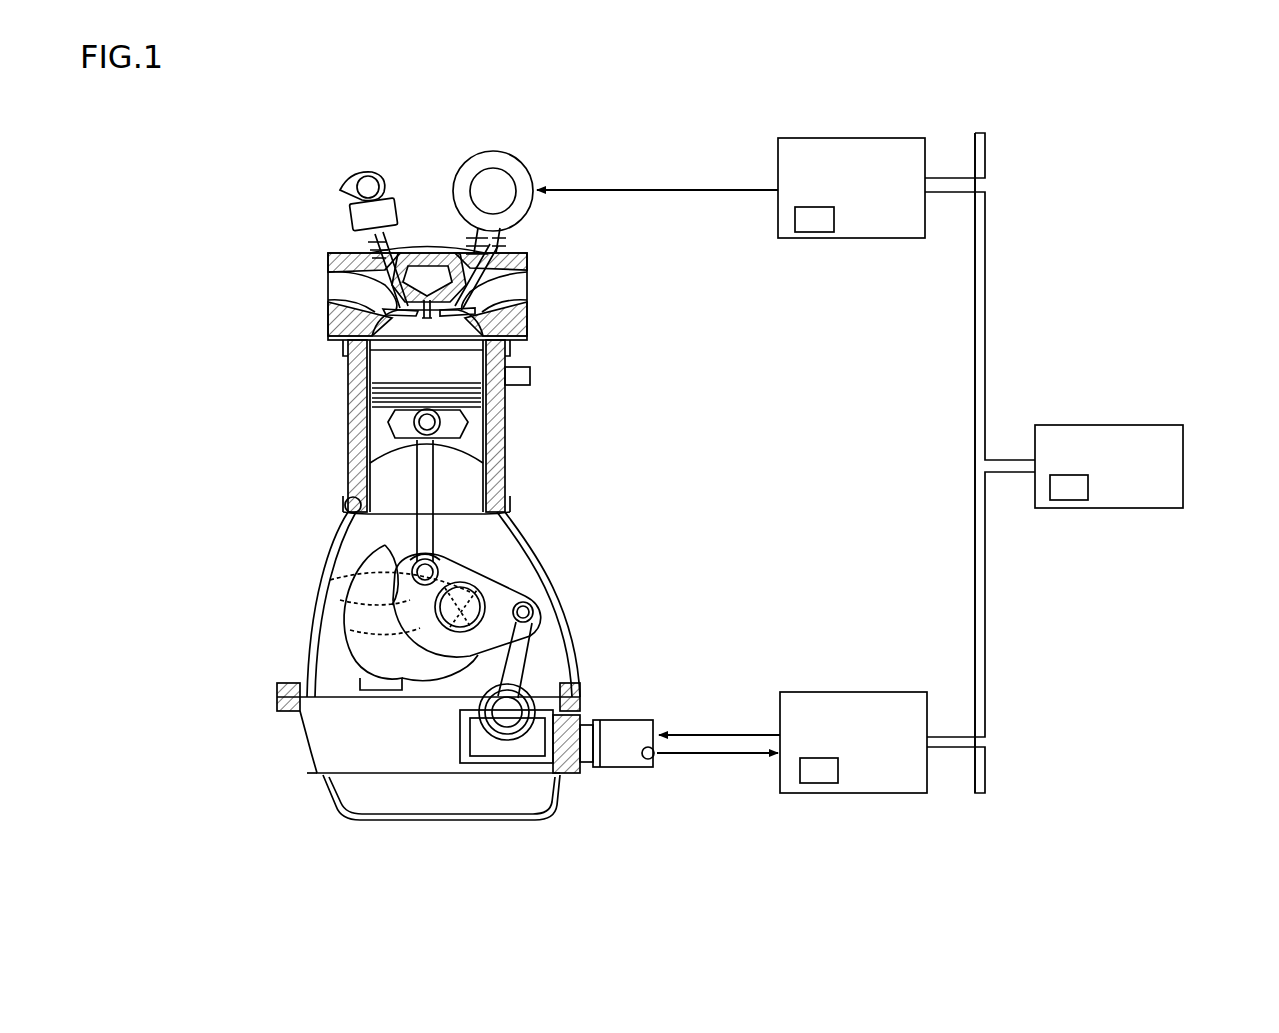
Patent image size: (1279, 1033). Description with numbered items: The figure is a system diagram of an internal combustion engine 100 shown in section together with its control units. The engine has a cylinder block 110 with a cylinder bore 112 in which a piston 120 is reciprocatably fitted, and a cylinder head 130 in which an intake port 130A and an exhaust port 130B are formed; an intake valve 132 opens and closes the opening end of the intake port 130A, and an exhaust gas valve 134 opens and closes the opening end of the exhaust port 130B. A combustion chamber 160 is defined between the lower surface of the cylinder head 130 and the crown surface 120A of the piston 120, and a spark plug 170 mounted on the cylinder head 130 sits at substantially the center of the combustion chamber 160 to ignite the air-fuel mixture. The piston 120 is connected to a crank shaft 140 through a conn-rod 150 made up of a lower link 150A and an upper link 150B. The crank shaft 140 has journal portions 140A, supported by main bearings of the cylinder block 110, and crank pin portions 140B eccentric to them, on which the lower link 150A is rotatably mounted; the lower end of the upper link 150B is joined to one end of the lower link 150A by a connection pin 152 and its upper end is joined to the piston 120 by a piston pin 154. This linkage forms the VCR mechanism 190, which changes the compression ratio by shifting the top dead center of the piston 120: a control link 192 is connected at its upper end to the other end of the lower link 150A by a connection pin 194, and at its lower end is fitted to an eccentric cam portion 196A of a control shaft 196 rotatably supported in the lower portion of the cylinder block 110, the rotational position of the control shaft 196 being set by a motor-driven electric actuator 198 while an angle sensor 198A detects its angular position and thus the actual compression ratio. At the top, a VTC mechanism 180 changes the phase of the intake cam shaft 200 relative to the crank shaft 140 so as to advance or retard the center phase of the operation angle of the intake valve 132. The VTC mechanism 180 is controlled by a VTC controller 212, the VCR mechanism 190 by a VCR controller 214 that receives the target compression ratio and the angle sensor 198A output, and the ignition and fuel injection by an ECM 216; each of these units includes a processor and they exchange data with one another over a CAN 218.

The internal combustion engine 100 is at (289, 172).
The cylinder block 110 is at (496, 555).
The cylinder bore 112 is at (348, 478).
The piston 120 is at (494, 427).
The crown surface 120A is at (522, 383).
The cylinder head 130 is at (514, 320).
The intake port 130A is at (514, 285).
The exhaust port 130B is at (344, 306).
The intake valve 132 is at (520, 298).
The exhaust gas valve 134 is at (344, 287).
The crank shaft 140 is at (332, 598).
The journal portion 140A is at (346, 625).
The crank pin portion 140B is at (483, 603).
The conn-rod 150 is at (436, 486).
The lower link 150A is at (467, 535).
The upper link 150B is at (425, 564).
The connection pin 152 is at (344, 577).
The piston pin 154 is at (388, 425).
The combustion chamber 160 is at (351, 368).
The spark plug 170 is at (390, 361).
The VTC mechanism 180 is at (516, 146).
The VCR mechanism 190 is at (510, 587).
The control link 192 is at (535, 645).
The connection pin 194 is at (531, 613).
The control shaft 196 is at (557, 697).
The eccentric cam portion 196A is at (577, 721).
The electric actuator 198 is at (624, 774).
The angle sensor 198A is at (648, 760).
The intake cam shaft 200 is at (511, 206).
The VTC controller 212 is at (854, 140).
The VCR controller 214 is at (854, 694).
The ECM 216 is at (1184, 438).
The CAN 218 is at (986, 613).